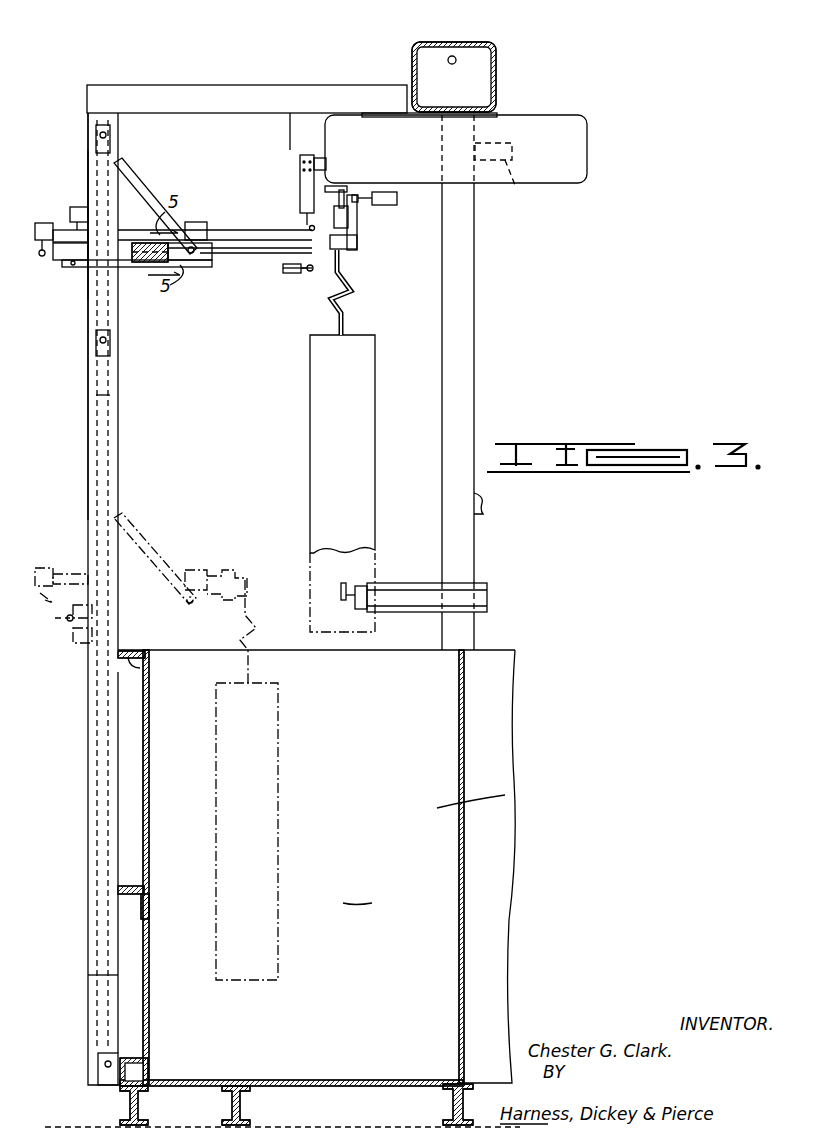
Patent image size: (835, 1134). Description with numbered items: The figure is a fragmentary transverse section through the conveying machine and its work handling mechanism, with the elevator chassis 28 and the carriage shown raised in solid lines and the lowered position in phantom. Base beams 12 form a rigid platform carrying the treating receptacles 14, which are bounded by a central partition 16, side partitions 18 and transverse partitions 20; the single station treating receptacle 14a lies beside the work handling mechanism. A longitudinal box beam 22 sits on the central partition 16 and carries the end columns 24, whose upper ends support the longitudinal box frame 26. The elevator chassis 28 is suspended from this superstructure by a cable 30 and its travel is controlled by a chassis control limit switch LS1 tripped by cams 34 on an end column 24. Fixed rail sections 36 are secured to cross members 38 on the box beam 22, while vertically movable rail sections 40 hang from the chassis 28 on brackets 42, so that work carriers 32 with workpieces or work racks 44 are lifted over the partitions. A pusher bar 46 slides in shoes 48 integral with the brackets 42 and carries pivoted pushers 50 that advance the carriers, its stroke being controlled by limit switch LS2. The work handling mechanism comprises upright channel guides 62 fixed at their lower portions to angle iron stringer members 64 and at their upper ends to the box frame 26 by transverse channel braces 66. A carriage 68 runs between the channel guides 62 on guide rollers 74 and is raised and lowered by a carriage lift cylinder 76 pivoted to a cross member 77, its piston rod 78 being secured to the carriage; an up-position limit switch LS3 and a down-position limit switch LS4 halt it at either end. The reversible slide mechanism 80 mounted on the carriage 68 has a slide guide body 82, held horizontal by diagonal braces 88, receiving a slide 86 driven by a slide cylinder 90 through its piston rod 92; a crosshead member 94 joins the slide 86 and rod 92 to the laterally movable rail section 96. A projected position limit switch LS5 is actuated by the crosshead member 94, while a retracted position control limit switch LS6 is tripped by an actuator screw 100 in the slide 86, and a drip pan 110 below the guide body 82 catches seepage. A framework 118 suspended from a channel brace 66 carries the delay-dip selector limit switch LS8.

The base beams 12 is at (138, 1105).
The treating receptacles 14 is at (493, 838).
The single station treating receptacle 14a is at (505, 795).
The central partition 16 is at (464, 730).
The side partitions 18 is at (150, 1033).
The transverse partitions 20 is at (357, 894).
The longitudinal box beam 22 is at (476, 636).
The end columns 24 is at (476, 297).
The longitudinal box frame 26 is at (497, 72).
The elevator chassis 28 is at (597, 156).
The cable 30 is at (453, 56).
The work carriers 32 is at (346, 285).
The cams 34 is at (492, 144).
The fixed rail sections 36 is at (340, 595).
The cross members 38 is at (488, 590).
The vertically movable rail sections 40 is at (348, 248).
The brackets 42 is at (357, 232).
The workpieces or work racks 44 is at (362, 458).
The pusher bar 46 is at (342, 192).
The shoes 48 is at (333, 186).
The pushers 50 is at (348, 220).
The channel guides 62 is at (100, 822).
The angle iron stringer members 64 is at (146, 664).
The transverse channel braces 66 is at (192, 88).
The carriage 68 is at (127, 168).
The guide rollers 74 is at (112, 132).
The carriage lift cylinder 76 is at (96, 975).
The cross member 77 is at (96, 1077).
The piston rod 78 is at (112, 395).
The reversible slide mechanism 80 is at (105, 125).
The slide guide body 82 is at (70, 263).
The slide 86 is at (234, 258).
The diagonal braces 88 is at (148, 190).
The slide cylinder 90 is at (204, 224).
The piston rod 92 is at (224, 232).
The crosshead member 94 is at (312, 244).
The laterally movable rail section 96 is at (294, 274).
The actuator screw 100 is at (135, 264).
The drip pan 110 is at (190, 262).
The framework 118 is at (290, 150).
The chassis control limit switch LS1 is at (515, 185).
The limit switch LS2 is at (386, 200).
The up-position limit switch LS3 is at (80, 207).
The down-position limit switch LS4 is at (82, 645).
The projected position limit switch LS5 is at (305, 200).
The retracted position control limit switch LS6 is at (45, 223).
The delay-dip selector limit switch LS8 is at (288, 272).